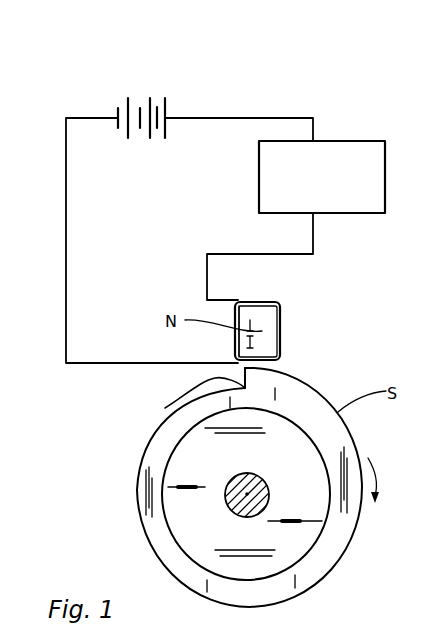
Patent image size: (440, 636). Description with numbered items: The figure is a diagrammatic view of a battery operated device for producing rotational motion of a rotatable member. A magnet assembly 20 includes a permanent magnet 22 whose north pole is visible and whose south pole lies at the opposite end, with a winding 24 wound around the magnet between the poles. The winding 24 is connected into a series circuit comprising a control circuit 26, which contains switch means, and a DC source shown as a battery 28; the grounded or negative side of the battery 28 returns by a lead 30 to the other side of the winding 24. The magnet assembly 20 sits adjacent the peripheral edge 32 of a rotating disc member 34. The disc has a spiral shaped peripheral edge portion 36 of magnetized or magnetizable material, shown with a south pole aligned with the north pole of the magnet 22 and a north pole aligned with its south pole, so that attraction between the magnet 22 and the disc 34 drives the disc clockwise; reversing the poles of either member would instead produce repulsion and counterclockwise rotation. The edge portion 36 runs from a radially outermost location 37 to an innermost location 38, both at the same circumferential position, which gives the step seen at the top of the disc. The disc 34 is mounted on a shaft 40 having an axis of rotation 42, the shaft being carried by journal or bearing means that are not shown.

The magnet assembly 20 is at (322, 323).
The permanent magnet 22 is at (268, 348).
The winding 24 is at (280, 308).
The control circuit 26 is at (385, 172).
The battery 28 is at (203, 13).
The lead 30 is at (66, 226).
The peripheral edge 32 is at (249, 487).
The rotating disc member 34 is at (358, 445).
The spiral shaped peripheral edge portion 36 is at (340, 530).
The radially outermost location 37 is at (245, 368).
The innermost location 38 is at (180, 403).
The shaft 40 is at (258, 503).
The axis of rotation 42 is at (246, 495).